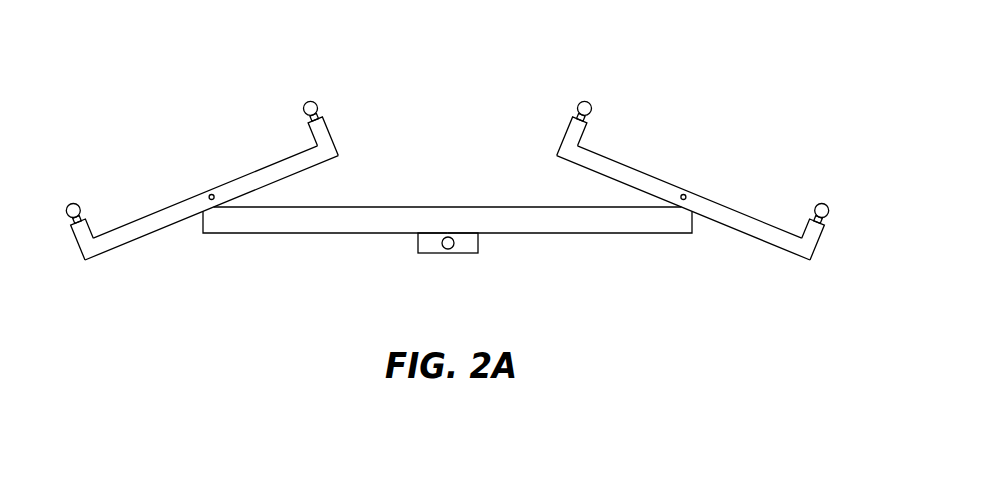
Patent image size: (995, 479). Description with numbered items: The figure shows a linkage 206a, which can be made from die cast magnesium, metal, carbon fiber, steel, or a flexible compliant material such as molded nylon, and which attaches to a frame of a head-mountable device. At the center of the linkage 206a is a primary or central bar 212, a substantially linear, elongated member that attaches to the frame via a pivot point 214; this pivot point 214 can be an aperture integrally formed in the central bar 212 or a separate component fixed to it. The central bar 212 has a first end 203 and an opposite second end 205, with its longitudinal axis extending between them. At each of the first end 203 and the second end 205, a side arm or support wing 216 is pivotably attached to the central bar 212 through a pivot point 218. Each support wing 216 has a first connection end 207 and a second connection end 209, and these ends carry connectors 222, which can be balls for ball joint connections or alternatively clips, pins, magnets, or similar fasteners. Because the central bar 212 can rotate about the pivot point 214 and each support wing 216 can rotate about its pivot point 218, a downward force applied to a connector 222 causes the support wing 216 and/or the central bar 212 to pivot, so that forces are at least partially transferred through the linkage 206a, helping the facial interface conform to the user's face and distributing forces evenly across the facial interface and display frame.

The linkage 206a is at (581, 40).
The first end 203 is at (238, 222).
The second end 205 is at (658, 222).
The first connection end 207 is at (78, 243).
The second connection end 209 is at (335, 145).
The central bar 212 is at (447, 207).
The pivot point 214 is at (452, 254).
The support wing 216 is at (264, 168).
The pivot point 218 is at (209, 195).
The connector 222 is at (69, 205).